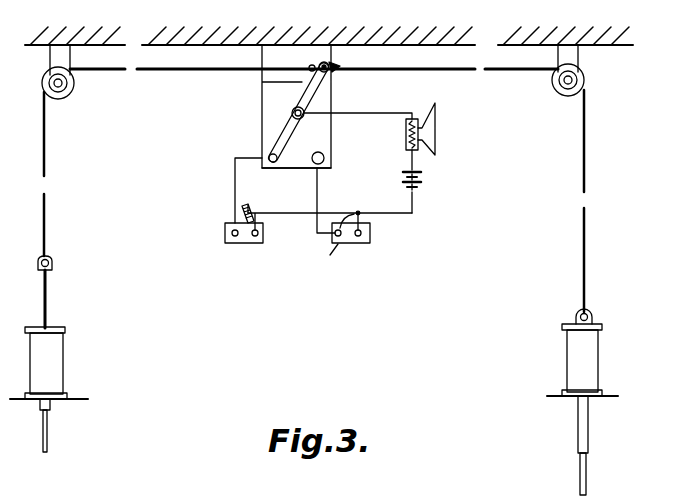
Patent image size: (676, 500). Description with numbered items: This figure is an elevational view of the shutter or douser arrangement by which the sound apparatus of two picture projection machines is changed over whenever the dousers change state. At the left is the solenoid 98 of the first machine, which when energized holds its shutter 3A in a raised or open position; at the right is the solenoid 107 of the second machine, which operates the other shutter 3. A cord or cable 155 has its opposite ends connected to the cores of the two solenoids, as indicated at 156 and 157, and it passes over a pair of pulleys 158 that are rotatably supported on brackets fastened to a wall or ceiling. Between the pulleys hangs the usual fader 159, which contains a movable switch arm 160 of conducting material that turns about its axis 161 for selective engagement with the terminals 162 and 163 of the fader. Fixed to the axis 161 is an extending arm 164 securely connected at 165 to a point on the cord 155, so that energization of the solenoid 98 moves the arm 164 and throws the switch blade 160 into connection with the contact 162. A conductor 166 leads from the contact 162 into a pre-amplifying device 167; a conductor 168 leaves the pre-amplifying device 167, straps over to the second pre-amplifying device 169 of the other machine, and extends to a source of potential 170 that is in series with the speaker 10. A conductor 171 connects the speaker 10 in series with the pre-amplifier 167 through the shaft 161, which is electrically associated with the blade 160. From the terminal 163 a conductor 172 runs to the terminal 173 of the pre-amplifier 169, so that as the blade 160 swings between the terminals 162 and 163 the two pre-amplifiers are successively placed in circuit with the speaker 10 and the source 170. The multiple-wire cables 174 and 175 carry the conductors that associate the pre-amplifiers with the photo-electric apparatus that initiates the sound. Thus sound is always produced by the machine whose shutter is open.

The shutter 3 is at (588, 472).
The shutter 3A is at (48, 438).
The speaker 10 is at (437, 130).
The solenoid 98 is at (63, 366).
The solenoid 107 is at (598, 363).
The cord 155 is at (46, 156).
The connection 156 is at (52, 262).
The connection 157 is at (589, 314).
The pulleys 158 is at (74, 88).
The fader 159 is at (332, 143).
The switch arm 160 is at (281, 138).
The axis 161 is at (292, 113).
The terminal 162 is at (294, 180).
The terminal 163 is at (314, 153).
The extending arm 164 is at (303, 96).
The connection 165 is at (334, 60).
The conductor 166 is at (235, 182).
The pre-amplifying device 167 is at (263, 243).
The conductor 168 is at (295, 214).
The pre-amplifying device 169 is at (370, 243).
The source of potential 170 is at (422, 182).
The conductor 171 is at (373, 113).
The conductor 172 is at (318, 180).
The terminal 173 is at (336, 259).
The multiple-wire cable 174 is at (252, 206).
The multiple-wire cable 175 is at (342, 219).